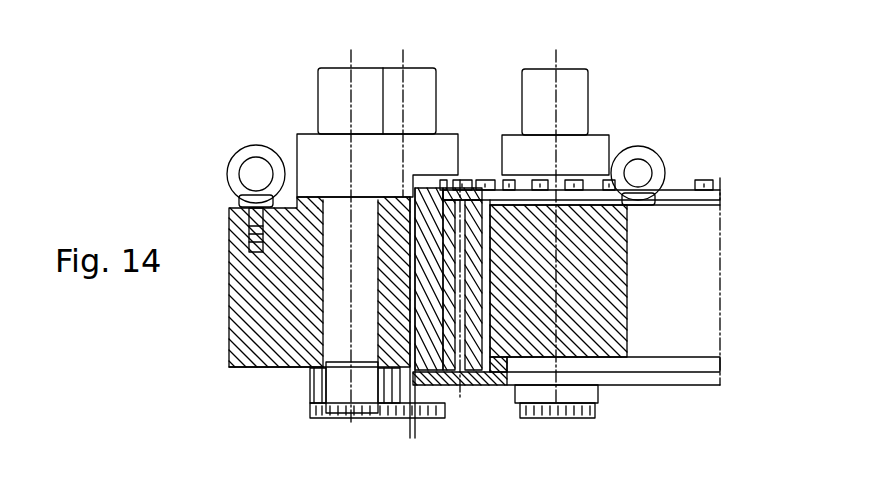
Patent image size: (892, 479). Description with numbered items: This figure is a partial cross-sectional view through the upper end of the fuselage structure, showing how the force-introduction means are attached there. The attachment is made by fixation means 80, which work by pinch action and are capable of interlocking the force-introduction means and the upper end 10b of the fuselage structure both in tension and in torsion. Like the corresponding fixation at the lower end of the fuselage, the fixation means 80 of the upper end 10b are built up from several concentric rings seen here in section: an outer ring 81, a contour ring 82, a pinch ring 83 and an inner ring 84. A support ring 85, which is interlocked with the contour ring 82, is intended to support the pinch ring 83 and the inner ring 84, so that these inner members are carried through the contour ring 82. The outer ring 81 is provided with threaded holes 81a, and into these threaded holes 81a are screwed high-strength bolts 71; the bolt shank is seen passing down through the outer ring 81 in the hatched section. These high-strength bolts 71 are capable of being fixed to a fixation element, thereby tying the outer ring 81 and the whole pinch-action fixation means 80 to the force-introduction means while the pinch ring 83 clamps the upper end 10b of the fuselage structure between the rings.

The high-strength bolt 71 is at (338, 87).
The contour ring 82 is at (438, 172).
The inner ring 84 is at (591, 271).
The threaded hole 81a is at (302, 336).
The outer ring 81 is at (262, 354).
The upper end of fuselage structure 10b is at (430, 438).
The pinch ring 83 is at (463, 387).
The support ring 85 is at (497, 385).
The fixation means 80 is at (640, 396).